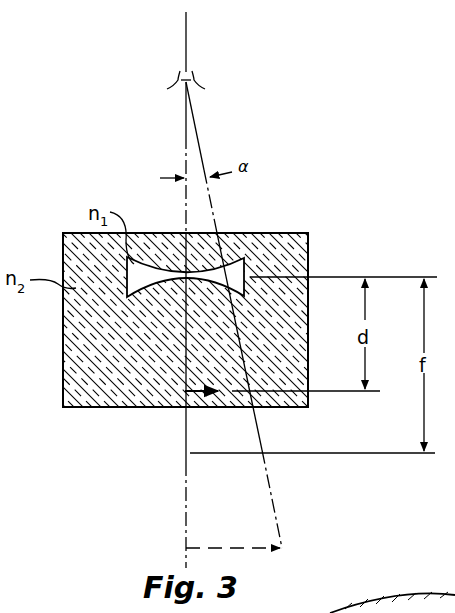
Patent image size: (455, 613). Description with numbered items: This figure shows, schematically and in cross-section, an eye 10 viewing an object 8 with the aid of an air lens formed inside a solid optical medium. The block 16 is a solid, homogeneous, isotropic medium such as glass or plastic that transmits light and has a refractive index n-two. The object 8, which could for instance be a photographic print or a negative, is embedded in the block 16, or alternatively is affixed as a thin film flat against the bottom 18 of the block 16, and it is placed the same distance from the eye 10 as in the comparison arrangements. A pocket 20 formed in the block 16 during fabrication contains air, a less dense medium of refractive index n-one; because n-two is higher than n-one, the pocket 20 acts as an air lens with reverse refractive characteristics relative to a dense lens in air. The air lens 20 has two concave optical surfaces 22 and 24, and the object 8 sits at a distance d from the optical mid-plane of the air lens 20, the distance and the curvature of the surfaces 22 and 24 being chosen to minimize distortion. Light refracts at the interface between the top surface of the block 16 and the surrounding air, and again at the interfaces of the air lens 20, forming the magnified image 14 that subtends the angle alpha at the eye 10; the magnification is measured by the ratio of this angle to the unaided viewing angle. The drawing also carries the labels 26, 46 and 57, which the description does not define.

The object 8 is at (208, 385).
The eye 10 is at (198, 92).
The magnified image 14 is at (218, 548).
The block 16 is at (308, 262).
The bottom of block 18 is at (212, 409).
The pocket 20 is at (152, 270).
The concave optical surface 22 is at (160, 280).
The concave optical surface 24 is at (232, 270).
The entrance face of block 26 is at (290, 233).
The housing 46 is at (454, 545).
The curved wall 57 is at (364, 604).